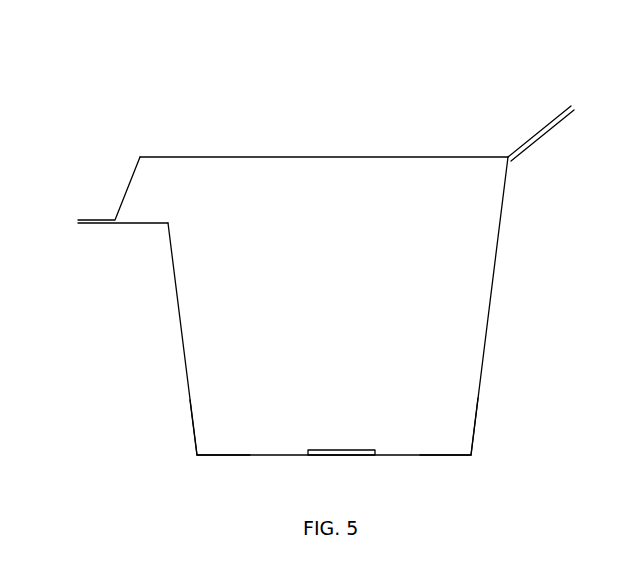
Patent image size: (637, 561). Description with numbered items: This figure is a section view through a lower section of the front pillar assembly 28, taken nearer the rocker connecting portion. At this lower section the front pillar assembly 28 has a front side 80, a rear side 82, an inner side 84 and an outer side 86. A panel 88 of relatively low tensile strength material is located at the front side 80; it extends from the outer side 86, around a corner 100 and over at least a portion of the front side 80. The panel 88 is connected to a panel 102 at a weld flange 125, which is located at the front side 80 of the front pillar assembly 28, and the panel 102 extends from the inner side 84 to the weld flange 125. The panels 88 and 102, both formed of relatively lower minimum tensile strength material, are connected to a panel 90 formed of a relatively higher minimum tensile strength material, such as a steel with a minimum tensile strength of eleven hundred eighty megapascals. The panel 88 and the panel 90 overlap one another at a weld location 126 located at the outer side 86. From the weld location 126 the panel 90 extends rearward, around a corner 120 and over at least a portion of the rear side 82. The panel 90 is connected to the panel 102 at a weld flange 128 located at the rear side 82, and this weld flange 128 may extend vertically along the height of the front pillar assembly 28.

The front pillar assembly 28 is at (206, 128).
The front side 80 is at (530, 270).
The rear side 82 is at (128, 306).
The inner side 84 is at (390, 117).
The outer side 86 is at (235, 465).
The panel 88 is at (489, 345).
The panel 90 is at (184, 356).
The corner 100 is at (475, 454).
The panel 102 is at (443, 157).
The corner 120 is at (196, 456).
The weld flange 125 is at (548, 123).
The weld location 126 is at (342, 450).
The weld flange 128 is at (96, 219).